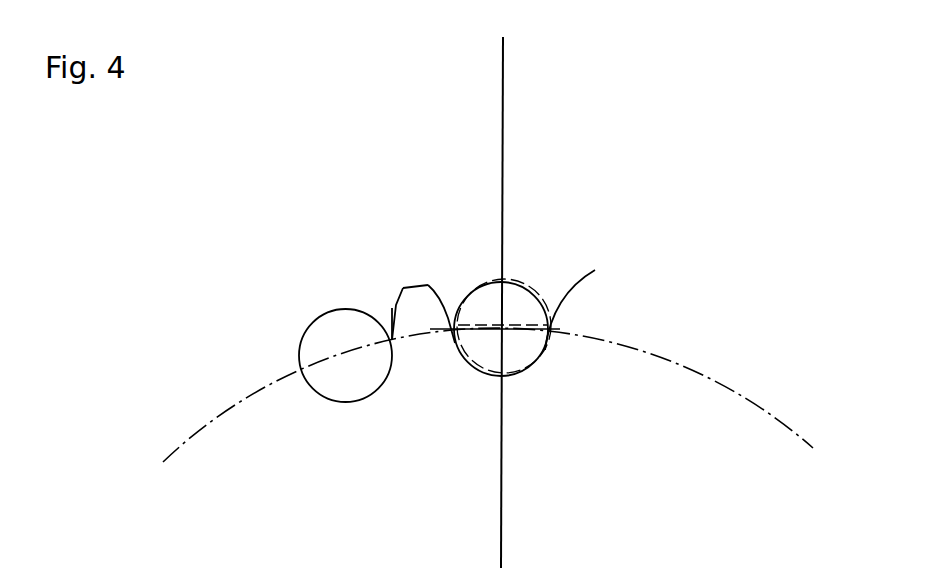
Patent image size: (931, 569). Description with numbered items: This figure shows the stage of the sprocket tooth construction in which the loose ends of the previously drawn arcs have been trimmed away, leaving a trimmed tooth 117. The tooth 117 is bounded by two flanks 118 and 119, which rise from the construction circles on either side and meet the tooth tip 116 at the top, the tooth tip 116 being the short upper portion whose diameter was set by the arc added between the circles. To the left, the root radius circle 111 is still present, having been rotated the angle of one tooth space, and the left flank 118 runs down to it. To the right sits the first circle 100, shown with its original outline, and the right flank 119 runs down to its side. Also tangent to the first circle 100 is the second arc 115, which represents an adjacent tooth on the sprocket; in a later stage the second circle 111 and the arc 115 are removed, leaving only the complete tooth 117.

The first circle 100 is at (533, 368).
The root radius circle 111 is at (313, 395).
The second arc 115 is at (575, 282).
The tooth tip 116 is at (412, 288).
The tooth 117 is at (425, 307).
The flank 118 is at (393, 307).
The flank 119 is at (440, 298).